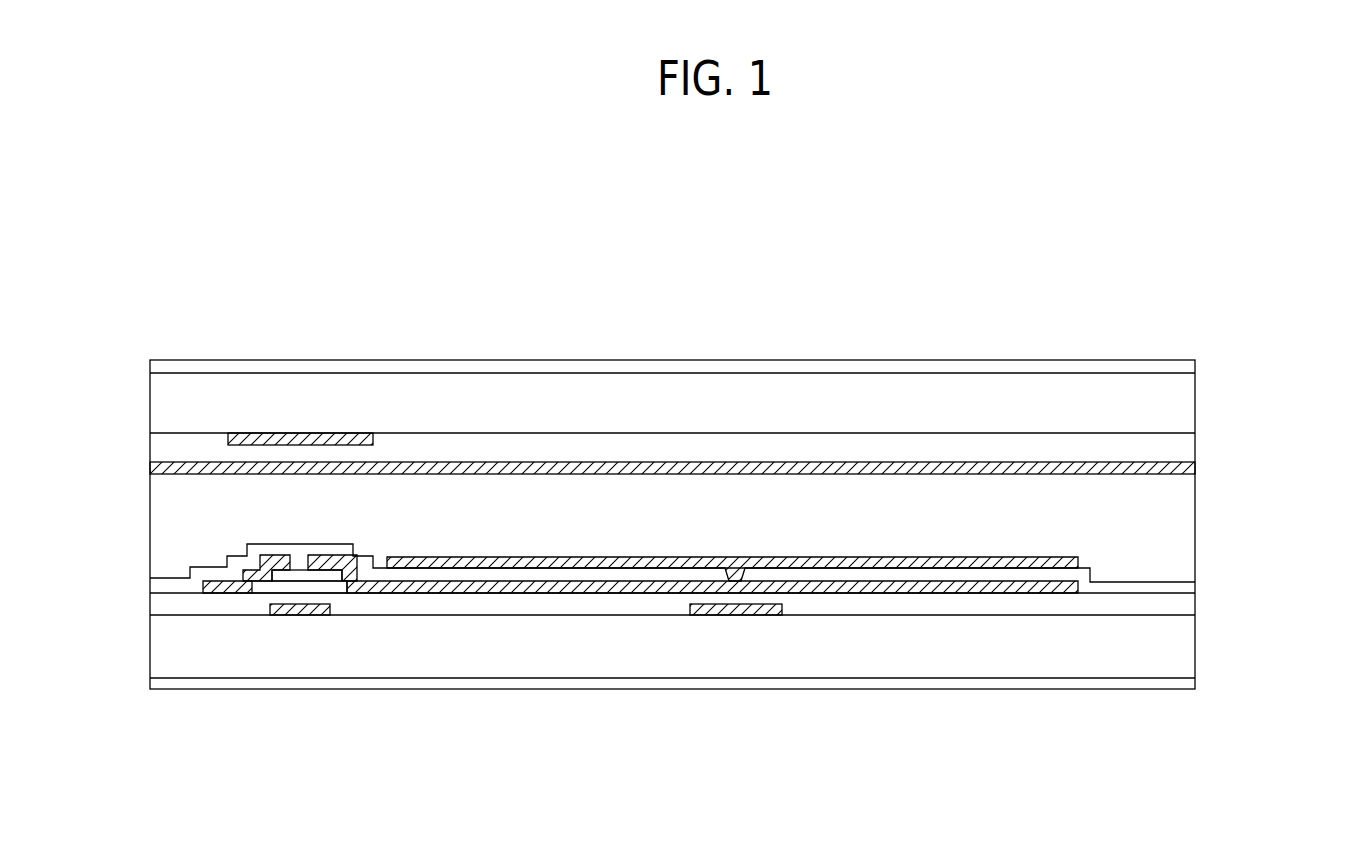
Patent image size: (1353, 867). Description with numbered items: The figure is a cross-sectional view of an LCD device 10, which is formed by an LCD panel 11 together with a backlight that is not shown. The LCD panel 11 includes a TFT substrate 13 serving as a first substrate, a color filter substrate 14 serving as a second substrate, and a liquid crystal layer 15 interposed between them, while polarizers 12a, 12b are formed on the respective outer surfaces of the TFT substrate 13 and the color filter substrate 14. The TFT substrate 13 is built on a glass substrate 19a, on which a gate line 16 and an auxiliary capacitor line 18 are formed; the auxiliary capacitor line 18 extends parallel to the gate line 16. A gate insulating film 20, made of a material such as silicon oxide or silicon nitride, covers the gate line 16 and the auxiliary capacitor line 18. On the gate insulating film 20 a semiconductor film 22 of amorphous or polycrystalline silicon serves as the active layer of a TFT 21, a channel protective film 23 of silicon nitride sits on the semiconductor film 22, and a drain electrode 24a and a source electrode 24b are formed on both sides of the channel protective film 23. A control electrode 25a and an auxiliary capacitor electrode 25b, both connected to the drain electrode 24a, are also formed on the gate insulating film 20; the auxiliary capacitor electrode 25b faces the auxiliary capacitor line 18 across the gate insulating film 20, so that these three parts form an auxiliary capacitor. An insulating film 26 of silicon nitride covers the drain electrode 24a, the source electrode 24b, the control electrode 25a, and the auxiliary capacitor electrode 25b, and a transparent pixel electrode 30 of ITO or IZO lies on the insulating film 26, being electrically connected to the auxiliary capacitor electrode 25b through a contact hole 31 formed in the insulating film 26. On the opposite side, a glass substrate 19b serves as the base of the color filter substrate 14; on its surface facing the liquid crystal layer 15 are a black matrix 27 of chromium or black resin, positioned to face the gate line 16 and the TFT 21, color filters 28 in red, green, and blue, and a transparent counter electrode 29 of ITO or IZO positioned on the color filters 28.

The LCD device 10 is at (650, 260).
The LCD panel 11 is at (1287, 385).
The polarizer 12a is at (1068, 689).
The polarizer 12b is at (1069, 368).
The TFT substrate 13 is at (142, 582).
The color filter substrate 14 is at (142, 372).
The liquid crystal layer 15 is at (150, 522).
The gate line 16 is at (303, 617).
The auxiliary capacitor line 18 is at (738, 617).
The glass substrate 19a is at (1180, 660).
The glass substrate 19b is at (1180, 402).
The gate insulating film 20 is at (1180, 608).
The TFT 21 is at (323, 571).
The semiconductor film 22 is at (334, 594).
The channel protective film 23 is at (300, 576).
The drain electrode 24a is at (244, 557).
The source electrode 24b is at (354, 572).
The control electrode 25a is at (535, 594).
The auxiliary capacitor electrode 25b is at (935, 594).
The insulating film 26 is at (1140, 587).
The black matrix 27 is at (302, 432).
The color filters 28 is at (1180, 453).
The counter electrode 29 is at (912, 476).
The pixel electrode 30 is at (1020, 556).
The contact hole 31 is at (736, 566).